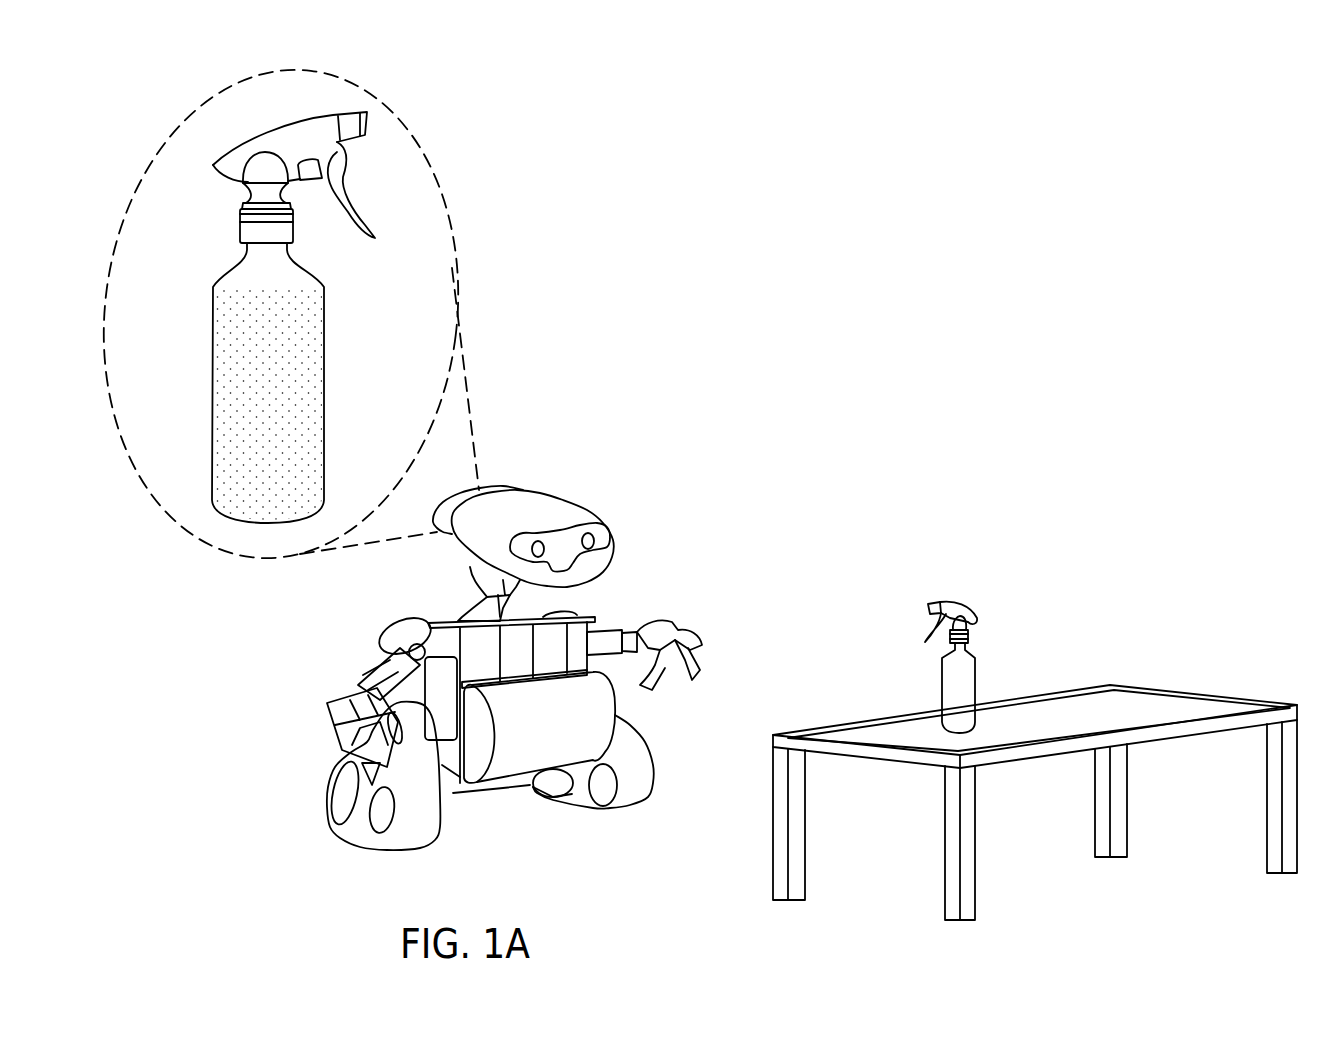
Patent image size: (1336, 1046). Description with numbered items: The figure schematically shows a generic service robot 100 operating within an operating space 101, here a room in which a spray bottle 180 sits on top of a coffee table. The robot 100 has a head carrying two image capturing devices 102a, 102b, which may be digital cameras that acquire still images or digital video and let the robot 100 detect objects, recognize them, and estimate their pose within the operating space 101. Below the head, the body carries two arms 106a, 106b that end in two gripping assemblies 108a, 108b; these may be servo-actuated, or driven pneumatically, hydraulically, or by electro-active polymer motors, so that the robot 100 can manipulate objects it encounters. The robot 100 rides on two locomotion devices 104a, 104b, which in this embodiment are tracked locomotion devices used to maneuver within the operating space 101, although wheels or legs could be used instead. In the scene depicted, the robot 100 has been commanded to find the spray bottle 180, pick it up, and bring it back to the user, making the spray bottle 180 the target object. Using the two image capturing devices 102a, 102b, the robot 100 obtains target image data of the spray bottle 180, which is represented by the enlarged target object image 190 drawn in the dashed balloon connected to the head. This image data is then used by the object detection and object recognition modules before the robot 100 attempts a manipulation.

The robot 100 is at (514, 672).
The operating space 101 is at (1035, 714).
The image capturing device 102a is at (540, 540).
The image capturing device 102b is at (598, 538).
The locomotion device 104a is at (355, 835).
The locomotion device 104b is at (643, 748).
The arm 106a is at (378, 658).
The arm 106b is at (606, 628).
The gripping assembly 108a is at (330, 727).
The gripping assembly 108b is at (700, 642).
The spray bottle 180 is at (970, 583).
The target object image 190 is at (324, 313).